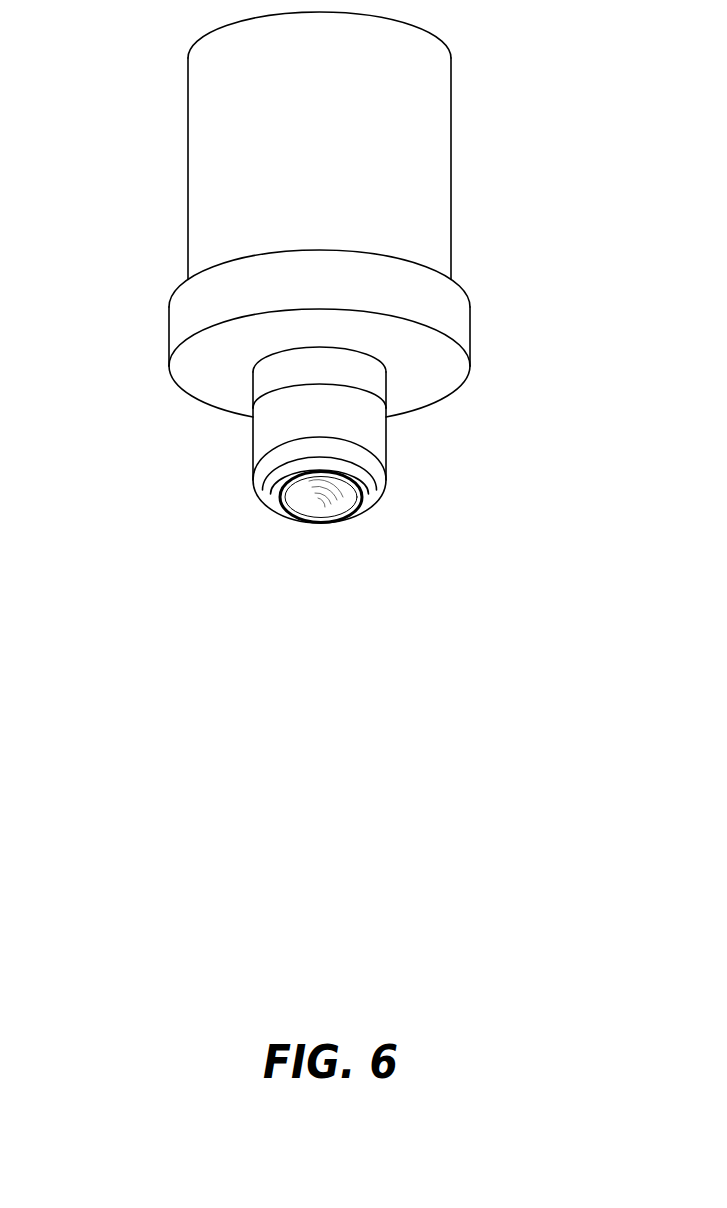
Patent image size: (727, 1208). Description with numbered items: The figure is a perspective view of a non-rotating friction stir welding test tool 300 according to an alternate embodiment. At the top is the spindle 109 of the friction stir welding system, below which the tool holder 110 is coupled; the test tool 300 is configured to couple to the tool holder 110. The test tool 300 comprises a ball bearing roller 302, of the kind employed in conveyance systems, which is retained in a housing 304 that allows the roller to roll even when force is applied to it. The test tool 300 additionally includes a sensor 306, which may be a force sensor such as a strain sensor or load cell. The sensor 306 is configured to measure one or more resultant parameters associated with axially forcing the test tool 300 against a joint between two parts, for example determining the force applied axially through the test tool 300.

The spindle 109 is at (185, 187).
The tool holder 110 is at (167, 345).
The non-rotating friction stir test tool 300 is at (352, 468).
The ball bearing roller 302 is at (313, 510).
The housing 304 is at (267, 430).
The sensor 306 is at (273, 367).